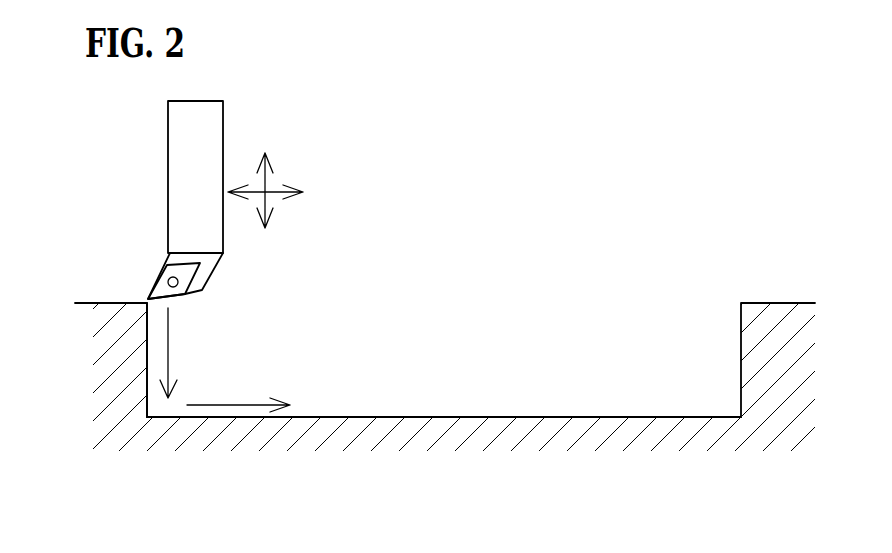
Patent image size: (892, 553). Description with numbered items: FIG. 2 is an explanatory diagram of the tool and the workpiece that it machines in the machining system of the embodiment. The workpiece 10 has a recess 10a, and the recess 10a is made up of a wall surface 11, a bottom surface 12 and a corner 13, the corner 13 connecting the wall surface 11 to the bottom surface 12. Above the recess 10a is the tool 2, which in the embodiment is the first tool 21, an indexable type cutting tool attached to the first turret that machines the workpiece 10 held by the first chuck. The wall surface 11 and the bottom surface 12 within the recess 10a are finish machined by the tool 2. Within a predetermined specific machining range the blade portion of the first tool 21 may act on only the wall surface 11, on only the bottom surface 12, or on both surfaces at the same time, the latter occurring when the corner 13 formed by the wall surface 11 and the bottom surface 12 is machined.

The tool 2 is at (168, 165).
The first tool 21 is at (166, 200).
The workpiece 10 is at (182, 460).
The recess 10a is at (388, 413).
The wall surface 11 is at (147, 352).
The bottom surface 12 is at (300, 417).
The corner 13 is at (160, 412).